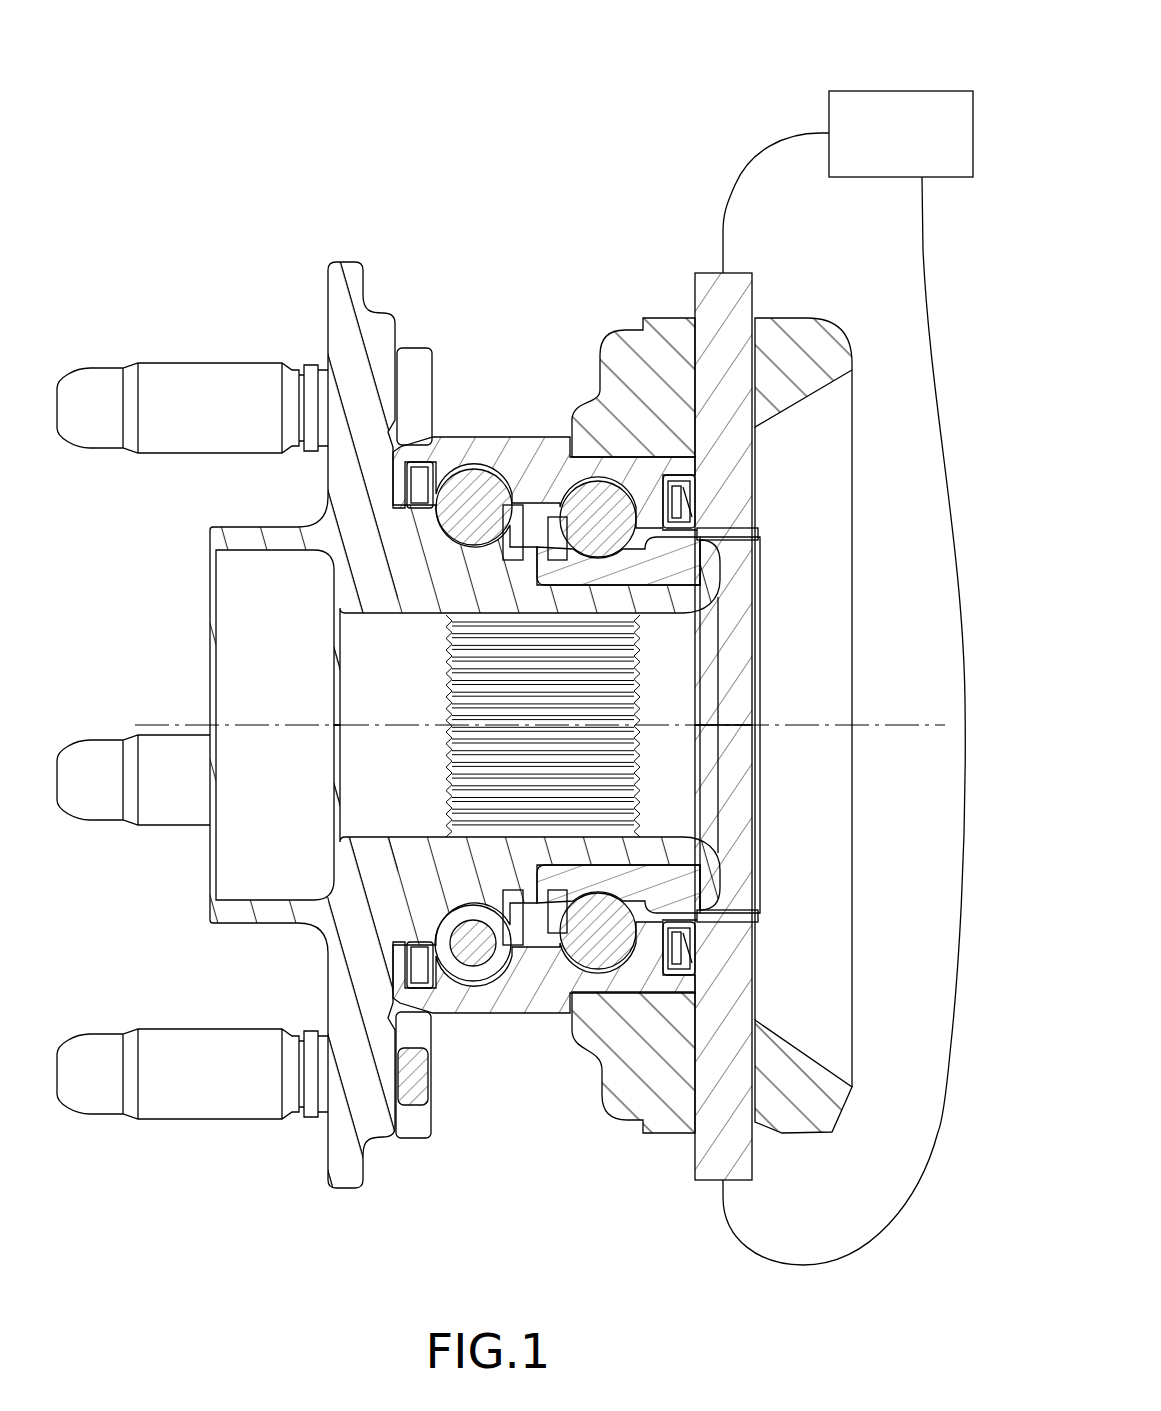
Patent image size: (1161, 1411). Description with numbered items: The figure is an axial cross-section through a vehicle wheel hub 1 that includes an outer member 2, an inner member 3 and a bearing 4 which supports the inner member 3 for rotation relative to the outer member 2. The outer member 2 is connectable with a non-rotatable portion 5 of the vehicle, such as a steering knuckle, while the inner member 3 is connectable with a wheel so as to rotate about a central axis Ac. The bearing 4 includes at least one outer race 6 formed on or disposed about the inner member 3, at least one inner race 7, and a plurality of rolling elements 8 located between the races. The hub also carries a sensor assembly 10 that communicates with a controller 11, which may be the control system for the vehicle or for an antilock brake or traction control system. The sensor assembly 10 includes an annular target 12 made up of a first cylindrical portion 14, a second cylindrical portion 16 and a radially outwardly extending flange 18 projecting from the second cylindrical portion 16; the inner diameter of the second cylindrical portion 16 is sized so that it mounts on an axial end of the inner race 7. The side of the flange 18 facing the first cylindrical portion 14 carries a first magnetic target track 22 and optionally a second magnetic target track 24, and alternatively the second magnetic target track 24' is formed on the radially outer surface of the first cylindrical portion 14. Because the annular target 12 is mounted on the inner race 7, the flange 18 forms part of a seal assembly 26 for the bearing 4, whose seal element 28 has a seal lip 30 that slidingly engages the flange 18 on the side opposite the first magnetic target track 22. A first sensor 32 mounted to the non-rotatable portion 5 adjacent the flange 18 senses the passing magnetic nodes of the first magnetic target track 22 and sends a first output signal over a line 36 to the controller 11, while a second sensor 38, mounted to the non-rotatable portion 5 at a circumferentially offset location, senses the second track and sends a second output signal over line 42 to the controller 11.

The vehicle wheel hub 1 is at (374, 126).
The outer member 2 is at (520, 1060).
The inner member 3 is at (345, 490).
The bearing 4 is at (620, 998).
The non-rotatable portion 5 is at (808, 1107).
The outer race 6 is at (493, 963).
The inner race 7 is at (547, 900).
The rolling elements 8 is at (470, 487).
The sensor assembly 10 is at (606, 297).
The controller 11 is at (888, 92).
The annular target 12 is at (760, 615).
The first cylindrical portion 14 is at (752, 541).
The second cylindrical portion 16 is at (702, 892).
The radially outwardly extending flange 18 is at (692, 502).
The first magnetic target track 22 is at (693, 490).
The second magnetic target track 24 is at (749, 502).
The second magnetic target track 24' is at (764, 518).
The seal assembly 26 is at (665, 978).
The seal element 28 is at (617, 983).
The seal lip 30 is at (678, 963).
The first sensor 32 is at (740, 300).
The line 36 is at (753, 160).
The second sensor 38 is at (742, 1163).
The line 42 is at (890, 1237).
The central axis Ac is at (916, 722).